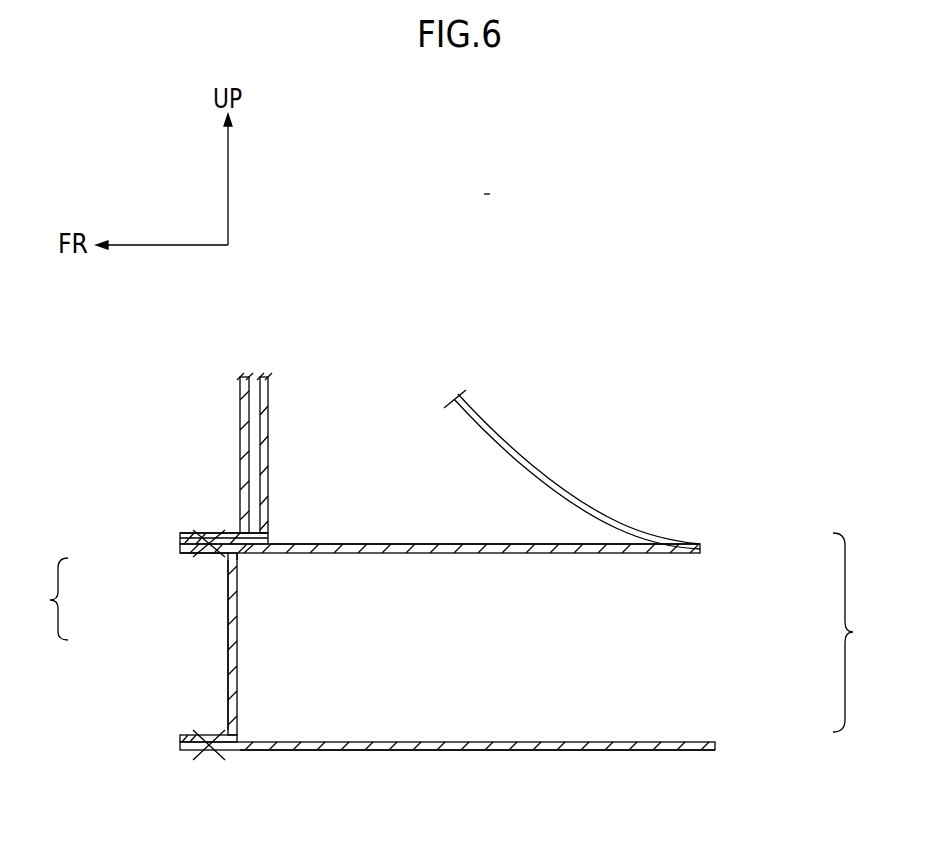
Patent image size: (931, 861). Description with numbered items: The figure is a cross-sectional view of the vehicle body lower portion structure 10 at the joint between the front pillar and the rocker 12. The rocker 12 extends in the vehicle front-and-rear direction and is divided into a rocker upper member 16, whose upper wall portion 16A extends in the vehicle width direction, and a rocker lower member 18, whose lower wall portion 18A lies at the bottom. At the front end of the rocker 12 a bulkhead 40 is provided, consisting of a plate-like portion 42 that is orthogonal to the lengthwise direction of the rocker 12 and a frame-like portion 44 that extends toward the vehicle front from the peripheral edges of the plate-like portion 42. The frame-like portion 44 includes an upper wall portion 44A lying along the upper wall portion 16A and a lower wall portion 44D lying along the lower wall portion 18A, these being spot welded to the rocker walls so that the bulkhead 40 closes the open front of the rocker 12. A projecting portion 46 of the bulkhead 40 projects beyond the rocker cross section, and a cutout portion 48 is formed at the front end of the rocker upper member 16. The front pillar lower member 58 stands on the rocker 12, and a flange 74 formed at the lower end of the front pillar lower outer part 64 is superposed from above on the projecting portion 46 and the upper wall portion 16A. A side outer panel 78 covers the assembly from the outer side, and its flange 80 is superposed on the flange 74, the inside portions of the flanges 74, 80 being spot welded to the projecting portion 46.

The vehicle body lower portion structure 10 is at (487, 202).
The rocker 12 is at (860, 632).
The rocker upper member 16 is at (640, 533).
The upper wall portion 16A is at (445, 543).
The rocker lower member 18 is at (636, 751).
The lower wall portion 18A is at (444, 751).
The bulkhead 40 is at (160, 646).
The plate-like portion 42 is at (227, 630).
The frame-like portion 44 is at (184, 556).
The upper wall portion 44A is at (216, 560).
The lower wall portion 44D is at (188, 734).
The projecting portion 46 is at (227, 592).
The cutout portion 48 is at (233, 556).
The front pillar lower member 58 is at (492, 430).
The front pillar lower outer part 64 is at (572, 446).
The flange 74 is at (180, 545).
The side outer panel 78 is at (239, 425).
The flange 80 is at (196, 531).